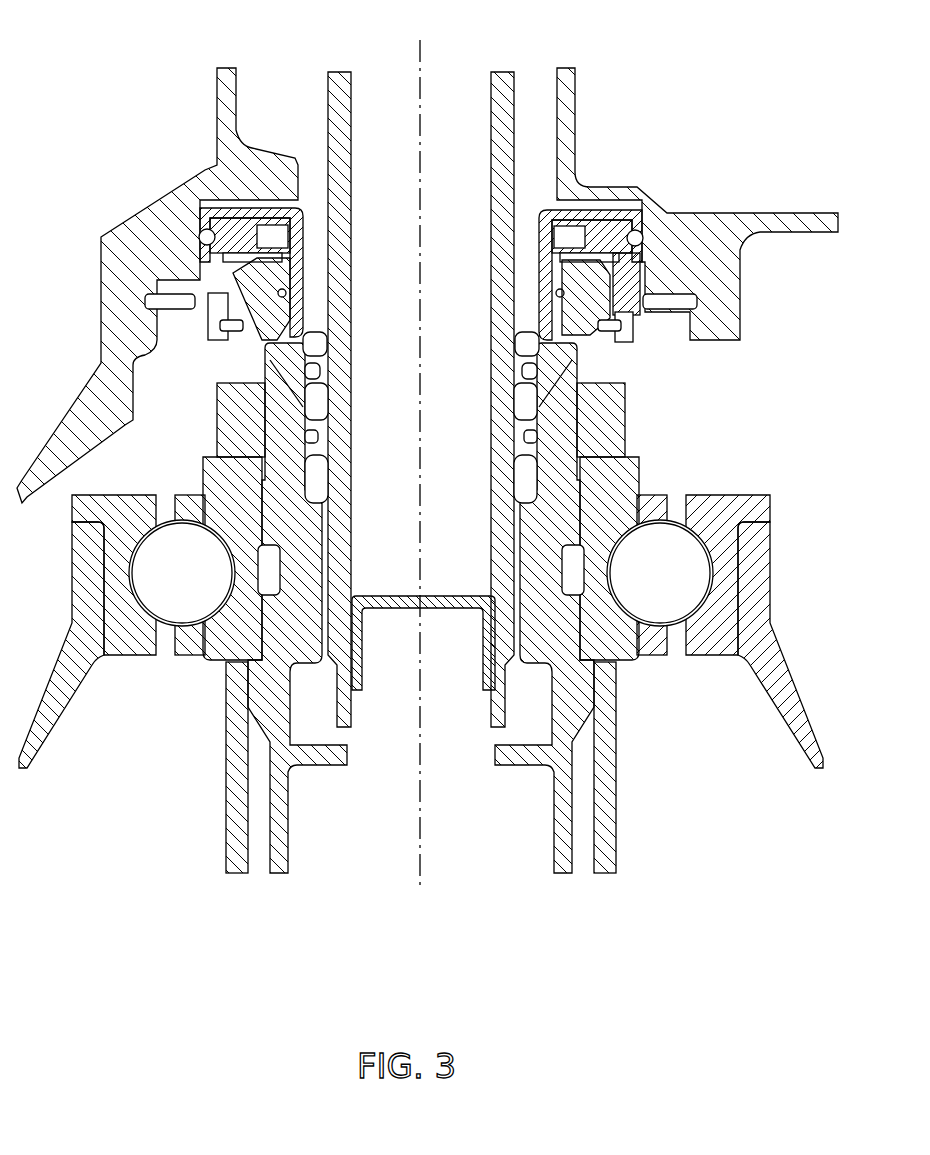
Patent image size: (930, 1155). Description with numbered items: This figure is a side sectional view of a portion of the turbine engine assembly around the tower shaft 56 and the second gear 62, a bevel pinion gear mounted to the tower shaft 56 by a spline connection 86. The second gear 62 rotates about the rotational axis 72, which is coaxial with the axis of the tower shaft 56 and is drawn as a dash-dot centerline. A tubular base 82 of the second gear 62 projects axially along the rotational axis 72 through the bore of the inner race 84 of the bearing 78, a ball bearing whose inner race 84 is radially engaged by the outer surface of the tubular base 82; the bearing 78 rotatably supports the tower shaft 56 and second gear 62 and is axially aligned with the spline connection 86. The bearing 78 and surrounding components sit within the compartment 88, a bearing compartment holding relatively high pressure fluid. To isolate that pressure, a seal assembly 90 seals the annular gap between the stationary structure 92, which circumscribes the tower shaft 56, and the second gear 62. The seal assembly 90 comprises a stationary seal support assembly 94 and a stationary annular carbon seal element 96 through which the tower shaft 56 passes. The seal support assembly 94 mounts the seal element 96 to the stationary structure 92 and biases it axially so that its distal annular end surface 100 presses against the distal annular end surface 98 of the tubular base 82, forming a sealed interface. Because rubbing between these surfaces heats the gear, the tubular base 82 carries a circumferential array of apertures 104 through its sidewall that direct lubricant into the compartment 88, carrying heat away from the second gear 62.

The tower shaft 56 is at (514, 98).
The second gear 62 is at (600, 740).
The second rotational axis 72 is at (420, 875).
The bearing 78 is at (100, 588).
The tubular base 82 is at (255, 738).
The inner race 84 is at (205, 665).
The spline connection 86 is at (527, 672).
The compartment 88 is at (692, 631).
The seal assembly 90 is at (645, 335).
The stationary structure 92 is at (155, 197).
The seal support assembly 94 is at (612, 205).
The seal element 96 is at (585, 338).
The distal annular end surface 98 is at (305, 341).
The distal annular end surface 100 is at (265, 355).
The apertures 104 is at (292, 413).